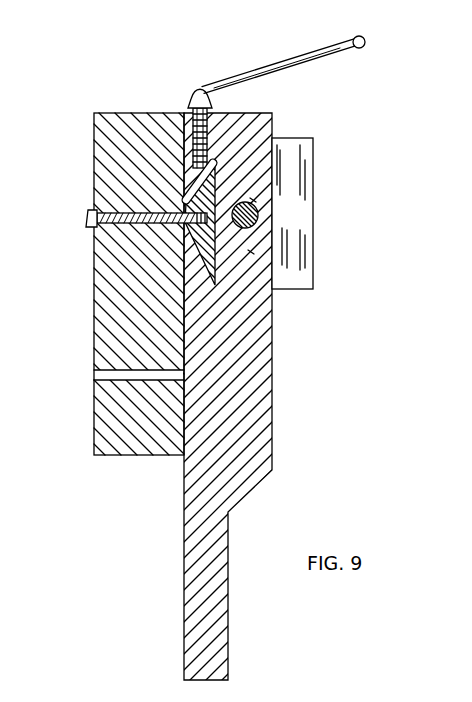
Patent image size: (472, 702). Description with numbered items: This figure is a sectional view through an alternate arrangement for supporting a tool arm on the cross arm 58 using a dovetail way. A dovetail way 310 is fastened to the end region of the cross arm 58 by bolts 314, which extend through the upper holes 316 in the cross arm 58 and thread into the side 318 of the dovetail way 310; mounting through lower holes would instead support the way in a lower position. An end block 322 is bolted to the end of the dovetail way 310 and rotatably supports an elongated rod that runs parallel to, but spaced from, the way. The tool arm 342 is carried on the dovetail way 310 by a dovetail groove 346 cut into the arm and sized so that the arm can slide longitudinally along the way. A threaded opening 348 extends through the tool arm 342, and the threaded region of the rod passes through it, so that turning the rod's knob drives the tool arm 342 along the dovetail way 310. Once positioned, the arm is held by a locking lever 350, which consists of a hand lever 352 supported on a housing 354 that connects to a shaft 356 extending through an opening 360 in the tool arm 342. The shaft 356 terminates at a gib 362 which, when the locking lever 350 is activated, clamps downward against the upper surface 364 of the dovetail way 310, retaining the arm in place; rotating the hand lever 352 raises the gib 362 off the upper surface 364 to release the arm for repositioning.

The cross arm 58 is at (94, 270).
The dovetail way 310 is at (250, 252).
The bolts 314 is at (110, 206).
The upper holes 316 is at (152, 225).
The side of dovetail way 318 is at (180, 211).
The end block 322 is at (313, 283).
The tool arm 342 is at (243, 438).
The dovetail groove 346 is at (250, 200).
The threaded opening 348 is at (258, 216).
The locking lever 350 is at (229, 79).
The hand lever 352 is at (330, 47).
The housing 354 is at (190, 94).
The shaft 356 is at (270, 131).
The opening 360 is at (190, 129).
The gib 362 is at (215, 158).
The upper surface of dovetail way 364 is at (184, 195).